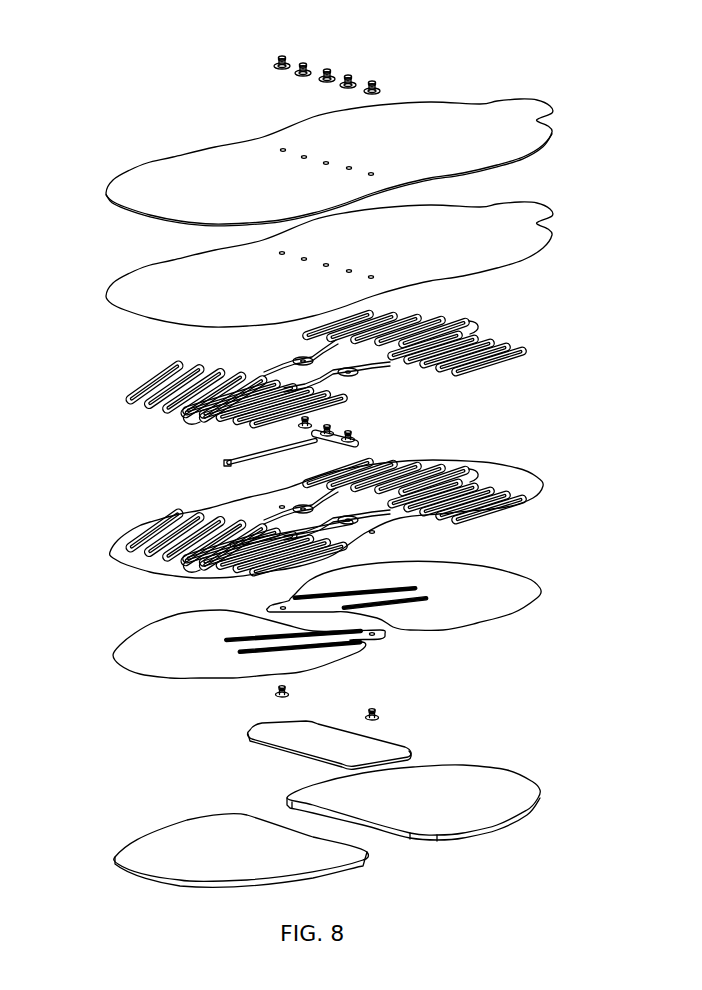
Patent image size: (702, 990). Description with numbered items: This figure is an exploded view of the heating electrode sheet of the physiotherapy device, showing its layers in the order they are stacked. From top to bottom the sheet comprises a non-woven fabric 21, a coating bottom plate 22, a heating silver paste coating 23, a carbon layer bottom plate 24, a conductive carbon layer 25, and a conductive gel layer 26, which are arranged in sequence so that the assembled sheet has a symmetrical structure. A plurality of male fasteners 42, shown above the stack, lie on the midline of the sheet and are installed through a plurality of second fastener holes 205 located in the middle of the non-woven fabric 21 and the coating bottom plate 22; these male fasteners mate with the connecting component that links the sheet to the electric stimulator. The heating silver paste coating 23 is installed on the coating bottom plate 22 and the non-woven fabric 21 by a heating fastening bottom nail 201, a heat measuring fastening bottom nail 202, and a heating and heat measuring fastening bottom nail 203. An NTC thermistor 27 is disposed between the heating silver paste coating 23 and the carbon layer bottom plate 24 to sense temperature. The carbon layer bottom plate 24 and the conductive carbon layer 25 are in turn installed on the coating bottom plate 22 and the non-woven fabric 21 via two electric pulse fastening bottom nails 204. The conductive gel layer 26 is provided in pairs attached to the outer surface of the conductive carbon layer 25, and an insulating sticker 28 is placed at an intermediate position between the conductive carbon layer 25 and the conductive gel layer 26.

The non-woven fabric 21 is at (320, 161).
The coating bottom plate 22 is at (157, 292).
The heating silver paste coating 23 is at (142, 380).
The carbon layer bottom plate 24 is at (133, 537).
The conductive carbon layer 25 is at (152, 648).
The conductive gel layer 26 is at (163, 855).
The NTC thermistor 27 is at (228, 460).
The insulating sticker 28 is at (285, 735).
The male fasteners 42 is at (372, 82).
The heating fastening bottom nail 201 is at (312, 422).
The heat measuring fastening bottom nail 202 is at (327, 436).
The heating and heat measuring fastening bottom nail 203 is at (354, 437).
The electric pulse fastening bottom nails 204 is at (375, 709).
The second fastener holes 205 is at (281, 148).